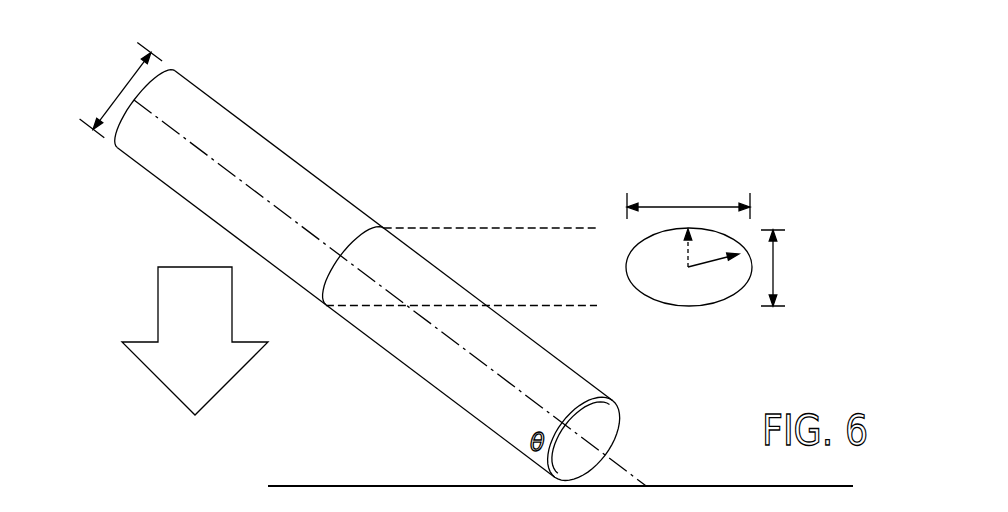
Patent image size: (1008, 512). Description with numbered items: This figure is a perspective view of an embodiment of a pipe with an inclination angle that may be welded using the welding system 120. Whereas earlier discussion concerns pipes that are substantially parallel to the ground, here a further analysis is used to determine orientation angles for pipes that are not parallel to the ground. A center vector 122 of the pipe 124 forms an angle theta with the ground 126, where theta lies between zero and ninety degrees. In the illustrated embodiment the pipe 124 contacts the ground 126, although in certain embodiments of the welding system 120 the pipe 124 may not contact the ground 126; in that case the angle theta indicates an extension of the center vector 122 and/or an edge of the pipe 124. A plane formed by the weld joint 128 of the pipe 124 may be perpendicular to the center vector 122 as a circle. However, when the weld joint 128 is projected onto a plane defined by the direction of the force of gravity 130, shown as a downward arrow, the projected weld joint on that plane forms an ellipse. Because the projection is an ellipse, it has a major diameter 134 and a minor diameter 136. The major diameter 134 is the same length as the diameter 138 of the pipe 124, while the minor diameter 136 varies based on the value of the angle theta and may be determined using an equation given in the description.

The welding system 120 is at (211, 468).
The center vector 122 is at (235, 116).
The pipe 124 is at (212, 158).
The ground 126 is at (413, 486).
The weld joint 128 is at (385, 228).
The force of gravity 130 is at (160, 381).
The major diameter 134 is at (690, 207).
The minor diameter 136 is at (773, 262).
The diameter 138 is at (122, 92).